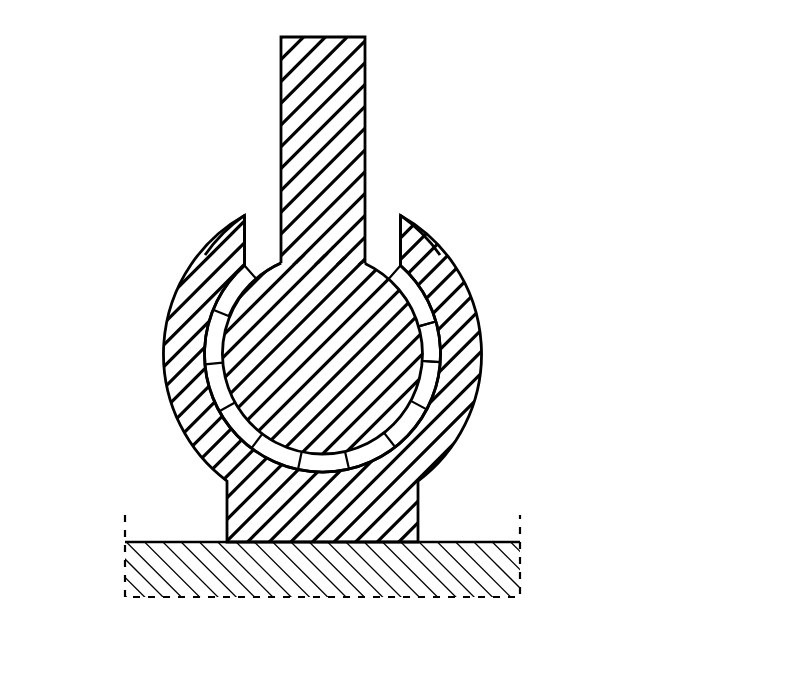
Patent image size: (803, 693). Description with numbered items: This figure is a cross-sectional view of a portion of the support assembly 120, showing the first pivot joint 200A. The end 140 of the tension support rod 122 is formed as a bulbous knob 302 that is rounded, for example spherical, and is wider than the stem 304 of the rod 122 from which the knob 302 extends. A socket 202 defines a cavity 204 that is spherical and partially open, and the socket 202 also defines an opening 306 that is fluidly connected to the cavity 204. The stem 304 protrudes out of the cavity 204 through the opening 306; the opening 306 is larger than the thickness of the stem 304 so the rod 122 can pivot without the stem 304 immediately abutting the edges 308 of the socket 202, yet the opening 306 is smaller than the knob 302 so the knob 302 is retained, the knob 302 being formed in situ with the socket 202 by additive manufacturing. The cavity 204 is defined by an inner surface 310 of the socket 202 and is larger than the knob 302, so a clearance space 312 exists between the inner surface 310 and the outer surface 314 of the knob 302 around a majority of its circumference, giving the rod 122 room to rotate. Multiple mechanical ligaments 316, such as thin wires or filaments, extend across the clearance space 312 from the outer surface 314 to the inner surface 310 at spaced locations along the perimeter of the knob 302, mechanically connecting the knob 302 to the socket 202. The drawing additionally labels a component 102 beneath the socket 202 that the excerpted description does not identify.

The support assembly 120 is at (143, 131).
The tension support rod 122 is at (281, 97).
The stem 304 is at (315, 155).
The opening 306 is at (383, 194).
The first pivot joint 200A is at (149, 250).
The edges of the socket 308 is at (252, 240).
The inner surface 310 is at (421, 290).
The bulbous knob 302 is at (245, 312).
The outer surface 314 is at (455, 338).
The clearance space 312 is at (427, 357).
The socket 202 is at (457, 388).
The cavity 204 is at (218, 378).
The end 140 is at (277, 407).
The mechanical ligaments 316 is at (418, 406).
The base substrate 102 is at (165, 562).